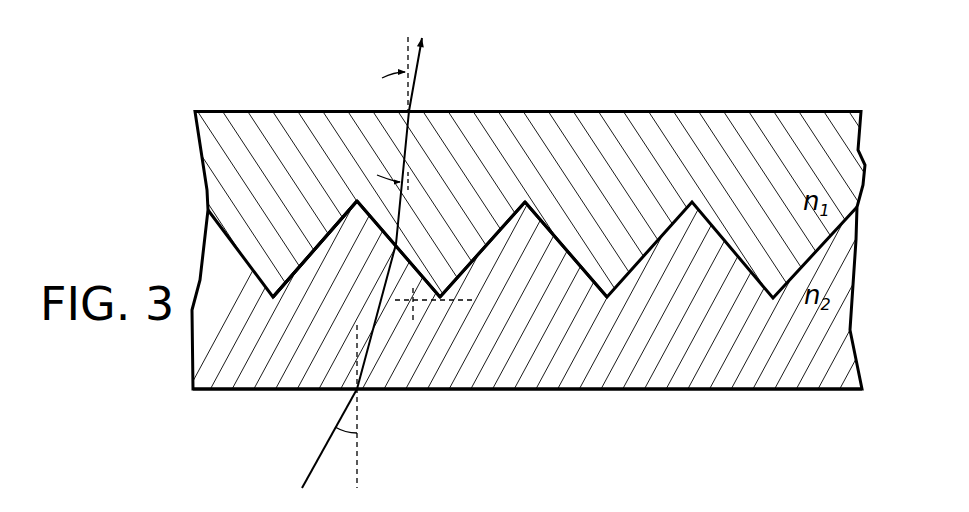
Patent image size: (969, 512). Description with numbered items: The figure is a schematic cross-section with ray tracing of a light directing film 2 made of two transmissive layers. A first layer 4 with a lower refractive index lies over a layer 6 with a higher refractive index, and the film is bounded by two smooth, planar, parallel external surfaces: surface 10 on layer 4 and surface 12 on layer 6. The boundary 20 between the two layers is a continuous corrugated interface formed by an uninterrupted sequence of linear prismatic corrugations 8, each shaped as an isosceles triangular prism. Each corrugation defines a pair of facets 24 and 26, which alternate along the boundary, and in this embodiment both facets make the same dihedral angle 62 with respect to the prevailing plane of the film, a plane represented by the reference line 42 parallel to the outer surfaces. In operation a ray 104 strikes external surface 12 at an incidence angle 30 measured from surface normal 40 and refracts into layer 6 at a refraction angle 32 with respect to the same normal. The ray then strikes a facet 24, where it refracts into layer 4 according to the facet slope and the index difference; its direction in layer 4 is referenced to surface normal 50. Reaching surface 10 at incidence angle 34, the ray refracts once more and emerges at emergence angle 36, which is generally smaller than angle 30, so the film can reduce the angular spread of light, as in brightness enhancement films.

The light directing film 2 is at (828, 88).
The first layer 4 is at (672, 123).
The layer 6 is at (728, 377).
The linear prismatic corrugations 8 is at (322, 225).
The surface 10 is at (287, 112).
The surface 12 is at (563, 392).
The boundary 20 is at (203, 215).
The facets 24 is at (364, 222).
The facets 26 is at (304, 257).
The incidence angle 30 is at (355, 438).
The refraction angle 32 is at (372, 322).
The incidence angle 34 is at (410, 182).
The emergence angle 36 is at (419, 72).
The surface normal 40 is at (358, 357).
The reference line 42 is at (466, 302).
The surface normal 50 is at (408, 42).
The dihedral angle 62 is at (415, 288).
The ray 104 is at (315, 460).